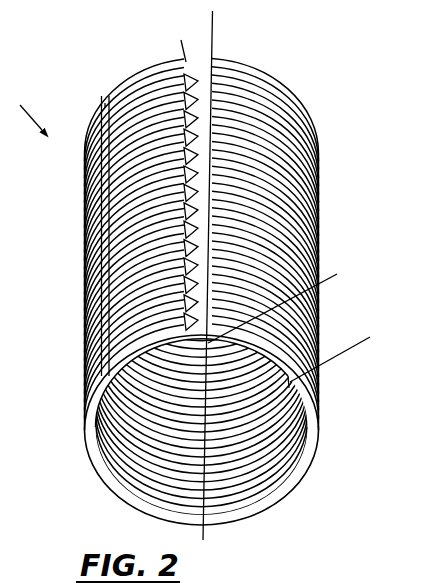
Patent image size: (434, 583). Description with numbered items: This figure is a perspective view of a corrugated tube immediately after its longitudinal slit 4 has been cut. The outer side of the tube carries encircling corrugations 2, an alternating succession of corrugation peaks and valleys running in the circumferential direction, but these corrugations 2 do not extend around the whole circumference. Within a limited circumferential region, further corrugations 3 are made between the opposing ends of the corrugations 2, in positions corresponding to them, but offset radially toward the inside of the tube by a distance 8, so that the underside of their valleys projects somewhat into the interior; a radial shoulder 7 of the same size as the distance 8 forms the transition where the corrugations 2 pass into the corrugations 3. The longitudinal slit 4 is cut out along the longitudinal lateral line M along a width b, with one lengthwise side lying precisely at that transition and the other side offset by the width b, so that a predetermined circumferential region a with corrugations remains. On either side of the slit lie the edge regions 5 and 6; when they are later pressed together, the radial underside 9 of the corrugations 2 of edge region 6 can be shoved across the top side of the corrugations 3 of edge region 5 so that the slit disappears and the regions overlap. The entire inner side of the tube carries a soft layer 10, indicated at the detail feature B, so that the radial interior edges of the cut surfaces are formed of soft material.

The corrugations 2 is at (93, 163).
The corrugations 3 is at (120, 116).
The longitudinal slit 4 is at (192, 82).
The edge region 5 is at (120, 103).
The edge region 6 is at (327, 267).
The shoulder 7 is at (93, 260).
The distance 8 is at (108, 378).
The radial underside 9 is at (150, 452).
The soft layer 10 is at (293, 435).
The feature B is at (128, 300).
The circumferential region a is at (172, 43).
The width b is at (205, 40).
The longitudinal lateral line M is at (222, 279).